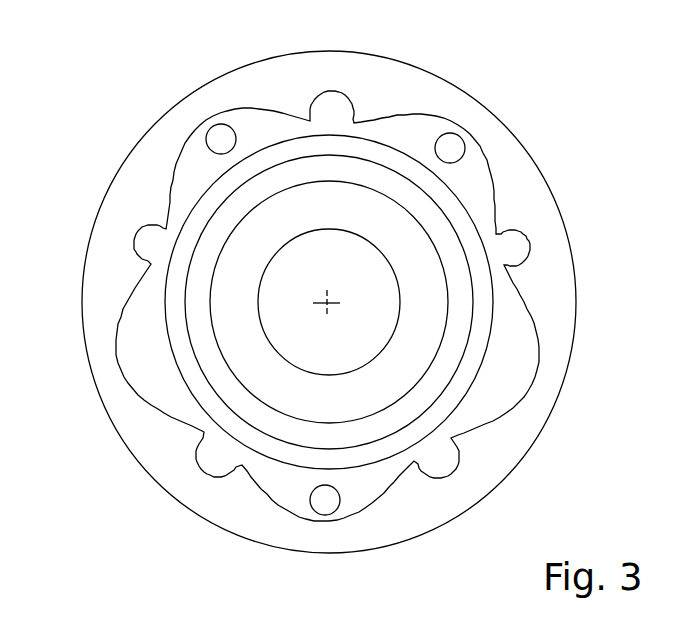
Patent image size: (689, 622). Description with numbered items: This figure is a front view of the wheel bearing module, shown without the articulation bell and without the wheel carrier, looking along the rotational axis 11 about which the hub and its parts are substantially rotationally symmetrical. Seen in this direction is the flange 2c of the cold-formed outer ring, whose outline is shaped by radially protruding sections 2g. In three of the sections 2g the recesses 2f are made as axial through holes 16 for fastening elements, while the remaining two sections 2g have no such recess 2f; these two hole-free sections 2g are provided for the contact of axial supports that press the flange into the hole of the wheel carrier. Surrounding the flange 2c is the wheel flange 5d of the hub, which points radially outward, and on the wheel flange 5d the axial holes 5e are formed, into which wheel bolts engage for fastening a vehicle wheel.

The flange 2c is at (505, 398).
The radially protruding sections 2g is at (256, 127).
The recesses 2f is at (361, 333).
The axial through holes 16 is at (218, 138).
The axial holes 5e is at (150, 240).
The wheel flange 5d is at (557, 308).
The rotational axis 11 is at (330, 299).